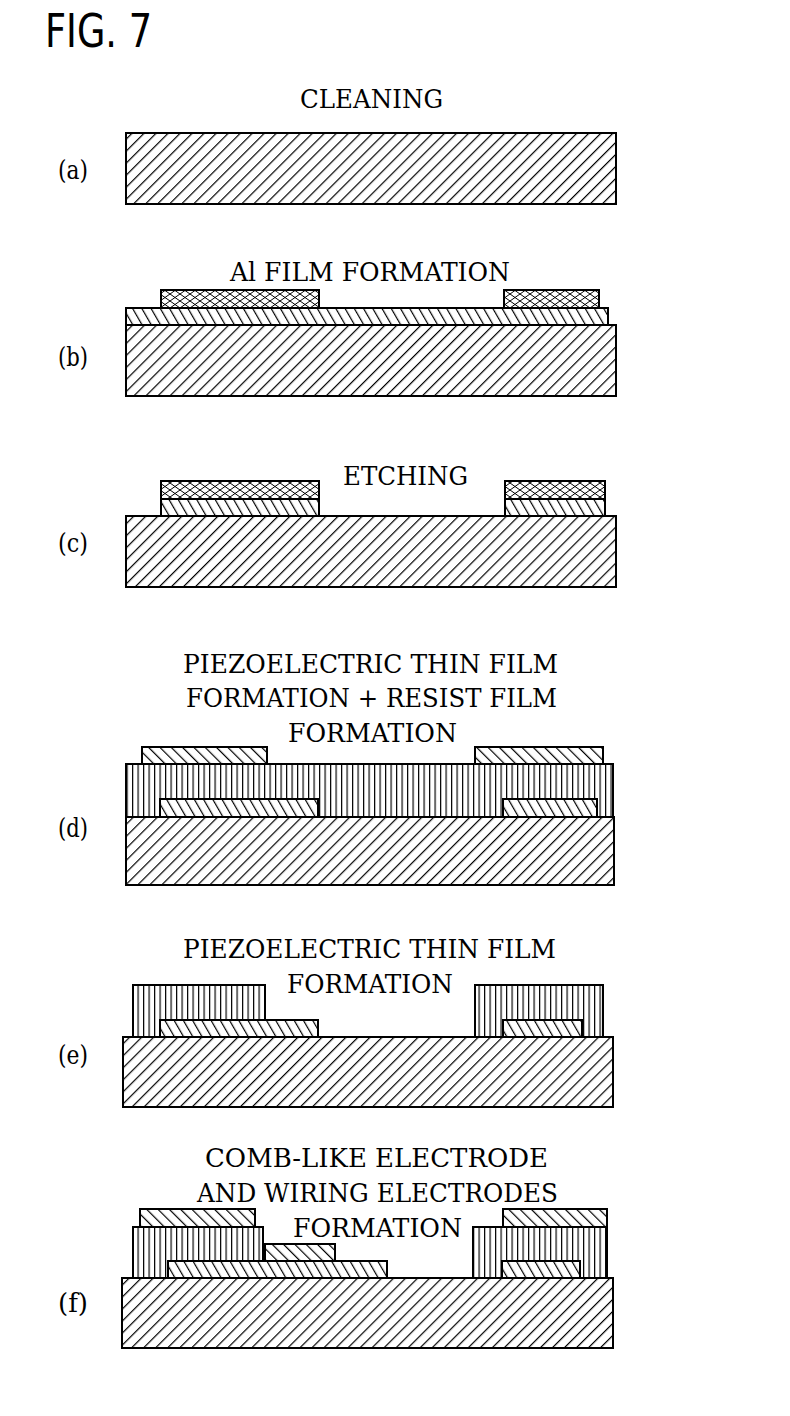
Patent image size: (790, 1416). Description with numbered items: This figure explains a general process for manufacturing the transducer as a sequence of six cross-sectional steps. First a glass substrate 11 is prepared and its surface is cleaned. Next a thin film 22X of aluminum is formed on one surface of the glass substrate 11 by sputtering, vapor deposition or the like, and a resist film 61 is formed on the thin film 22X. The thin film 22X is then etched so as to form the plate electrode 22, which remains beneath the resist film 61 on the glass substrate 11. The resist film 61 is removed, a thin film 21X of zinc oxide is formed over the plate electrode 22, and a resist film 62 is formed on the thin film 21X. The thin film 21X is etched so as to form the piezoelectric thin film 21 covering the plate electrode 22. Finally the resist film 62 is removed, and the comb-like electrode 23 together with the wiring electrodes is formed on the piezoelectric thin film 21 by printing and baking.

The glass substrate 11 is at (617, 168).
The piezoelectric thin film 21 is at (596, 995).
The thin film of zinc oxide 21X is at (606, 783).
The plate electrode 22 is at (606, 508).
The thin film of aluminum 22X is at (608, 315).
The comb-like electrode 23 is at (607, 1211).
The resist film 61 is at (582, 292).
The resist film 62 is at (590, 748).